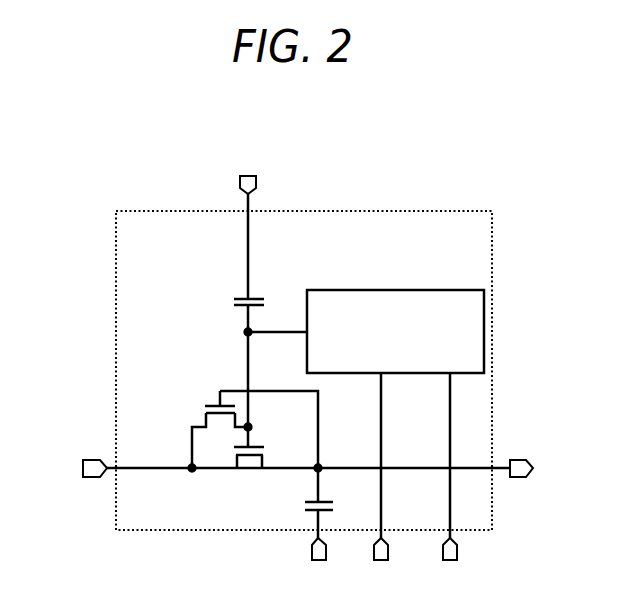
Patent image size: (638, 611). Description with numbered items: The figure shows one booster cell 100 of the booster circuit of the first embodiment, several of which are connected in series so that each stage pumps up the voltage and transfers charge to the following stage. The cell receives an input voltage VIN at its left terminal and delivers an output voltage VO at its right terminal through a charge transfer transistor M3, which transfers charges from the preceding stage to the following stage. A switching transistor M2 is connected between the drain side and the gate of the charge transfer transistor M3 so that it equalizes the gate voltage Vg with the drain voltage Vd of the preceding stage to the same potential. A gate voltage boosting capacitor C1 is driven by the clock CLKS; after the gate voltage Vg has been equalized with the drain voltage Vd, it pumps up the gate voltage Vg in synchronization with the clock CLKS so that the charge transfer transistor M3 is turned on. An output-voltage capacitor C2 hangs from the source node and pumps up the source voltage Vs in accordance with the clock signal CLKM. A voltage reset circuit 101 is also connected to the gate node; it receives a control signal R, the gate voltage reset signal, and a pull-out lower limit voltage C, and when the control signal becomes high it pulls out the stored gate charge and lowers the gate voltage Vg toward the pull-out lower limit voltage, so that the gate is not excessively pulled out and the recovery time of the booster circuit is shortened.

The booster cell 100 is at (377, 211).
The voltage reset circuit 101 is at (392, 290).
The gate voltage boosting capacitor C1 is at (227, 301).
The output-voltage capacitor C2 is at (322, 497).
The switching transistor M2 is at (200, 411).
The charge transfer transistor M3 is at (241, 475).
The drain voltage Vd is at (213, 445).
The gate voltage Vg is at (253, 418).
The source voltage Vs is at (273, 467).
The clock CLKS is at (246, 173).
The clock signal CLKM is at (321, 563).
The input voltage VIN is at (74, 470).
The output voltage VO is at (540, 471).
The control signal R is at (380, 563).
The pull-out lower limit voltage C is at (451, 563).